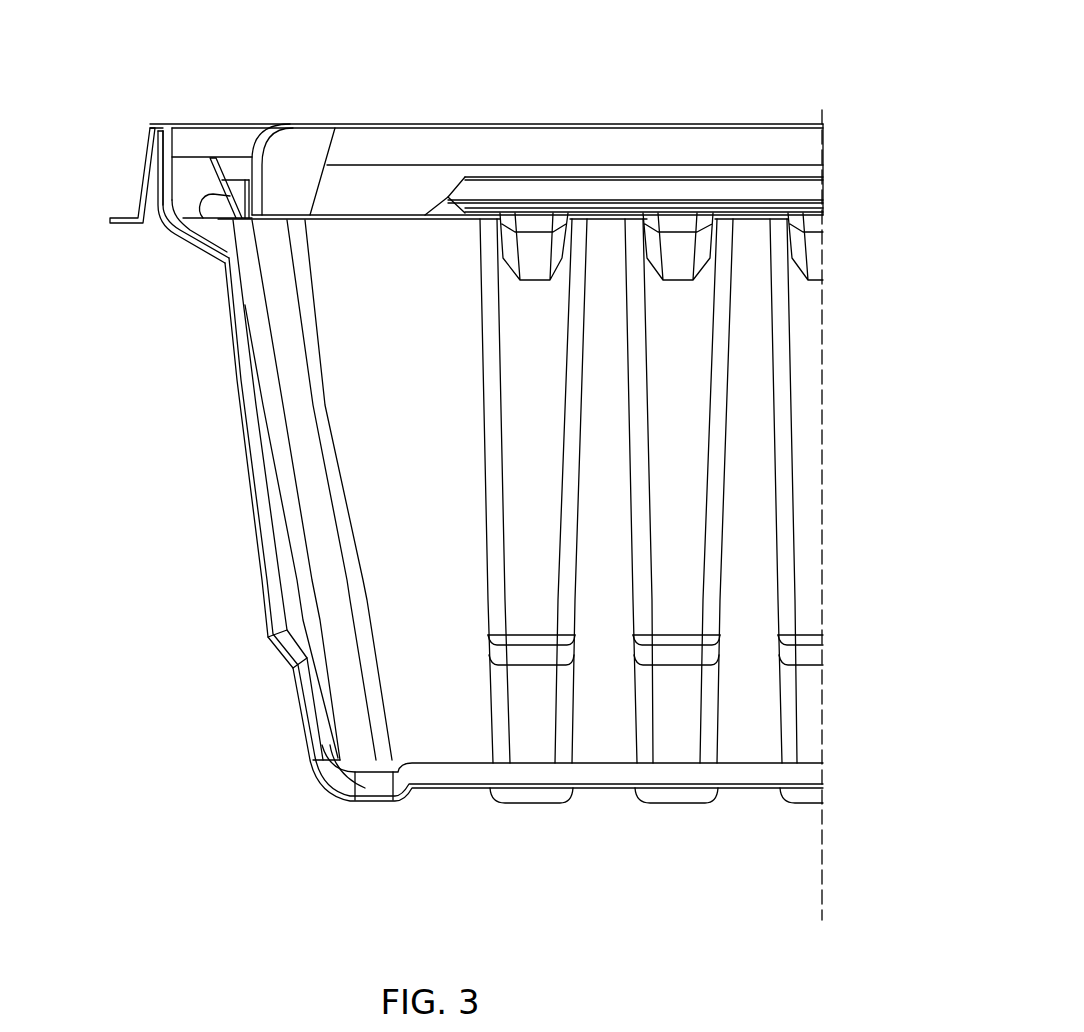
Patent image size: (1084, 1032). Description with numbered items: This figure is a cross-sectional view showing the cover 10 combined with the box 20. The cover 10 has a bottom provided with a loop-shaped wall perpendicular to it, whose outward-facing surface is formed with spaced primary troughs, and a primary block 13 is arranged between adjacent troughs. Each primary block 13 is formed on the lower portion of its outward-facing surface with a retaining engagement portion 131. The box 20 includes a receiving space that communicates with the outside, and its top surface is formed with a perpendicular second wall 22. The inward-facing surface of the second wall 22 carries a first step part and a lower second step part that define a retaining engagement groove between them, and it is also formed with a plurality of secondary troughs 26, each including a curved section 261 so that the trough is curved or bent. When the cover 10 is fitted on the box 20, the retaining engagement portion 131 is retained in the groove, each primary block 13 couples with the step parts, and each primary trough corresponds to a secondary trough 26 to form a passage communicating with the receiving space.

The cover 10 is at (392, 123).
The primary block 13 is at (214, 168).
The retaining engagement portion 131 is at (200, 210).
The box 20 is at (241, 408).
The second wall 22 is at (148, 150).
The secondary trough 26 is at (167, 133).
The curved section 261 is at (162, 222).